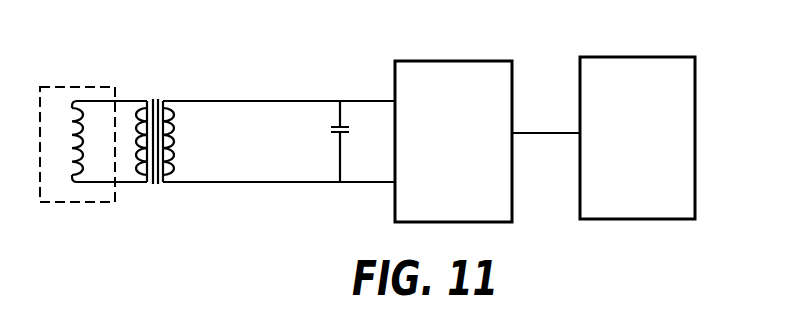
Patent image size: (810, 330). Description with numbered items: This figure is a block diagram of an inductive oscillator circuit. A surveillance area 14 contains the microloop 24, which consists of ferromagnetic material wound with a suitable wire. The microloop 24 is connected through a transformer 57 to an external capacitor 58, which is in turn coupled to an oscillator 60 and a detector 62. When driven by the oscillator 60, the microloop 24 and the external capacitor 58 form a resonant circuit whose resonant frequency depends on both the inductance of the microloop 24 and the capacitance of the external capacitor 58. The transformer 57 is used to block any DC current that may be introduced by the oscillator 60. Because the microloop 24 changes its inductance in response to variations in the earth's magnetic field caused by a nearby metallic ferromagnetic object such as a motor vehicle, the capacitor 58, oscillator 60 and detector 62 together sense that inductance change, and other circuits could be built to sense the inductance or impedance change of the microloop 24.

The surveillance area 14 is at (86, 202).
The microloop 24 is at (73, 102).
The transformer 57 is at (161, 98).
The external capacitor 58 is at (328, 130).
The oscillator 60 is at (480, 60).
The detector 62 is at (660, 56).